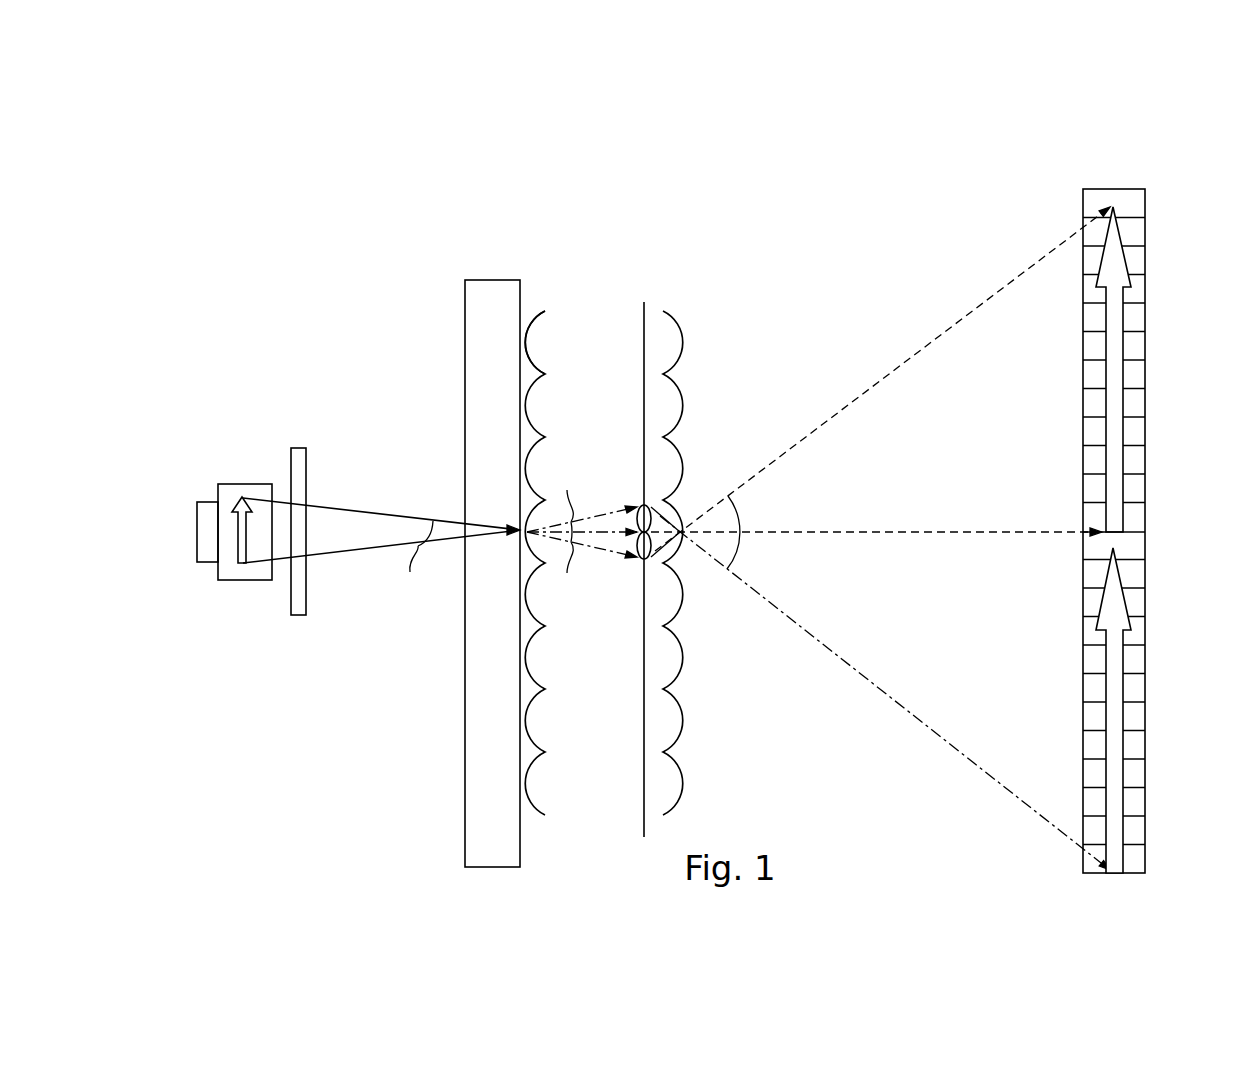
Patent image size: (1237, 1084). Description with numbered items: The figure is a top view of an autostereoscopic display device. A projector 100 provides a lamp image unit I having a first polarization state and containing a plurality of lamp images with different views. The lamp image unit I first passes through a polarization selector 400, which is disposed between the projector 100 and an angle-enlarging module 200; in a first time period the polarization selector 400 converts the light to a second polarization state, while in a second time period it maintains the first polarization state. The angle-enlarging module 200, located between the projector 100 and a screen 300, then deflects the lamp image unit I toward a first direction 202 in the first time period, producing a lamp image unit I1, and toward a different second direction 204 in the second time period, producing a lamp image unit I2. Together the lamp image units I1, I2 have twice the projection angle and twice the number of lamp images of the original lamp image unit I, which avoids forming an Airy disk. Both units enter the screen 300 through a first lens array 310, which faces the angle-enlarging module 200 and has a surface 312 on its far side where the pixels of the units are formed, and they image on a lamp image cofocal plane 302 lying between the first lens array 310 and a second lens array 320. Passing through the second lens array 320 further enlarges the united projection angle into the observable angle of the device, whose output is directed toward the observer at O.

The projector 100 is at (233, 492).
The angle-enlarging module 200 is at (487, 290).
The first direction 202 is at (1197, 515).
The second direction 204 is at (1197, 550).
The screen 300 is at (518, 221).
The lamp image cofocal plane 302 is at (637, 317).
The first lens array 310 is at (538, 313).
The surface 312 is at (535, 340).
The second lens array 320 is at (680, 315).
The polarization selector 400 is at (297, 455).
The lamp image unit I is at (370, 506).
The lamp image unit I1 is at (600, 503).
The lamp image unit I2 is at (600, 560).
The output image / screen O is at (1150, 482).